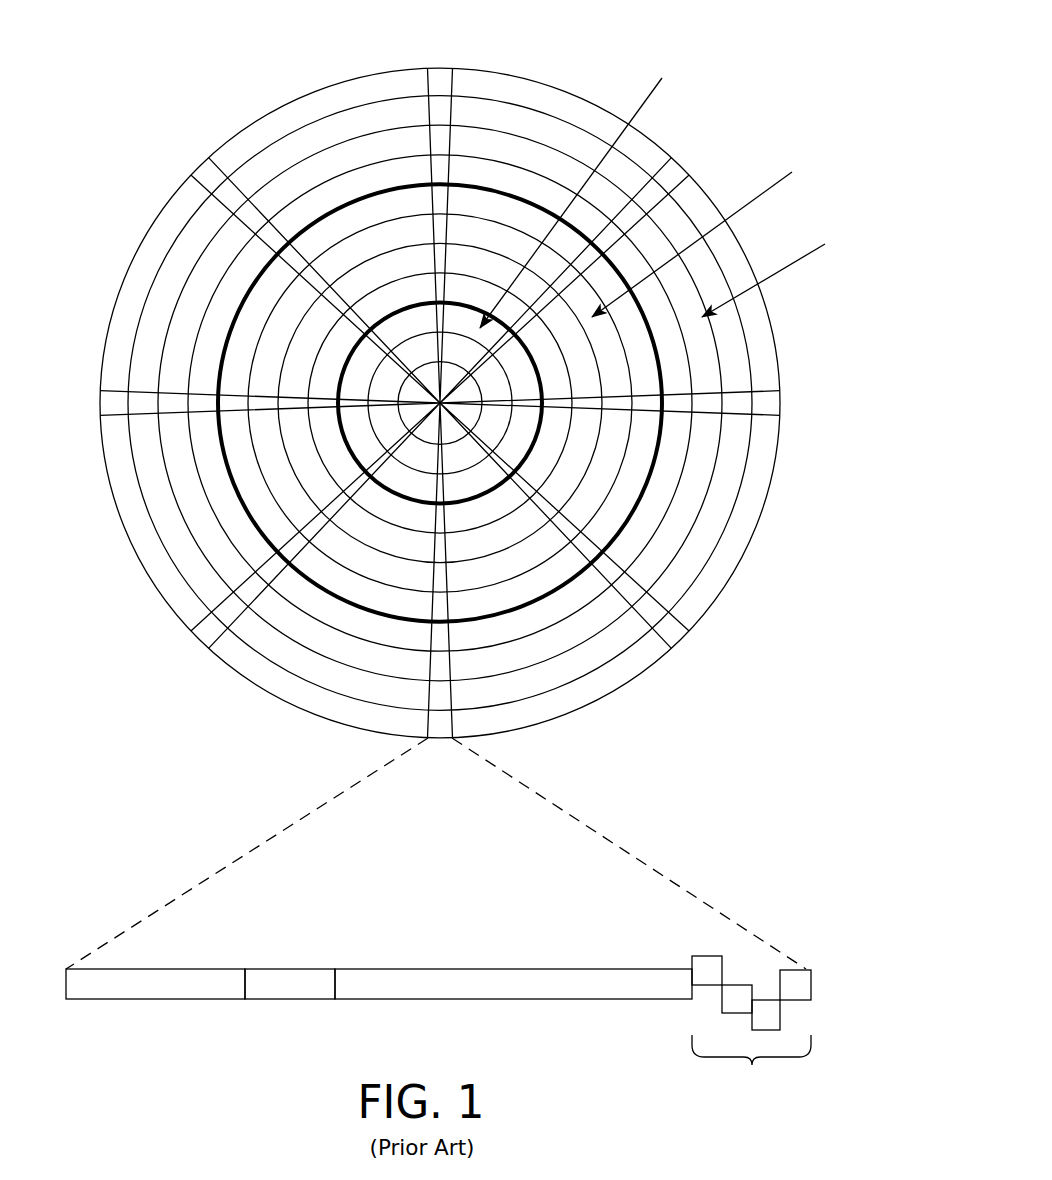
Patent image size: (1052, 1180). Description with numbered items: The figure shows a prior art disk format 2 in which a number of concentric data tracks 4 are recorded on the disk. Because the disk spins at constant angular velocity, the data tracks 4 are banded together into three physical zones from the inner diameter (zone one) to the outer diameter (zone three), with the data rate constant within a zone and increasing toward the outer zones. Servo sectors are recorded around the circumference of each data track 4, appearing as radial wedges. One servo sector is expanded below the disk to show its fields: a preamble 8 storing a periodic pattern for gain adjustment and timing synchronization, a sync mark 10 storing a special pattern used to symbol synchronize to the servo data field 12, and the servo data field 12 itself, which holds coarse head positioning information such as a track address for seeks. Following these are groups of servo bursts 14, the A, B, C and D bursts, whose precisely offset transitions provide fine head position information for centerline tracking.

The disk format 2 is at (187, 75).
The data tracks 4 is at (558, 128).
The preamble 8 is at (132, 999).
The sync mark 10 is at (286, 999).
The servo data field 12 is at (496, 999).
The servo bursts 14 is at (680, 940).